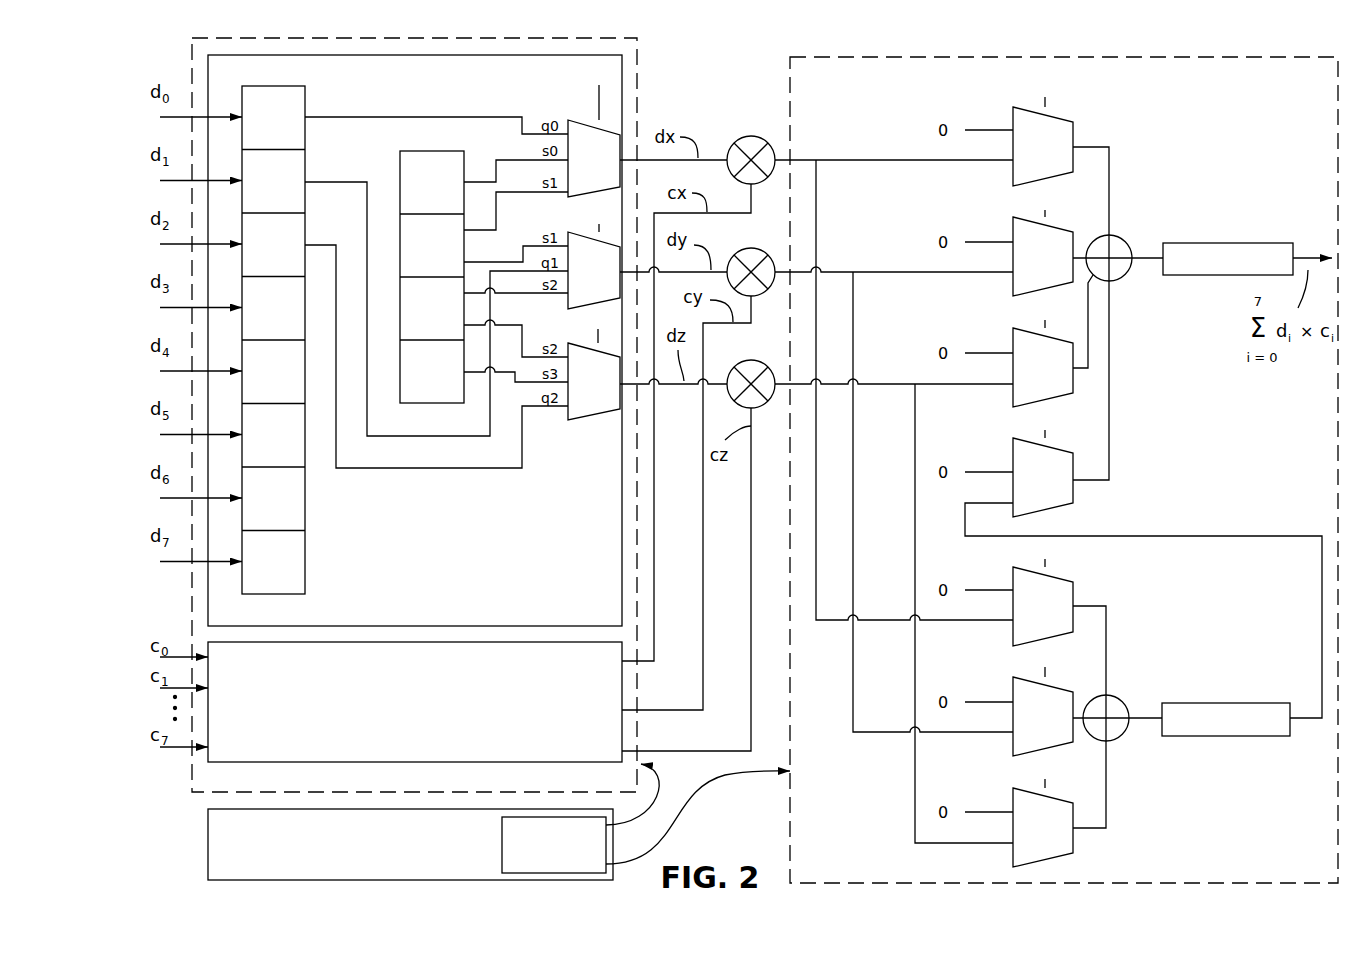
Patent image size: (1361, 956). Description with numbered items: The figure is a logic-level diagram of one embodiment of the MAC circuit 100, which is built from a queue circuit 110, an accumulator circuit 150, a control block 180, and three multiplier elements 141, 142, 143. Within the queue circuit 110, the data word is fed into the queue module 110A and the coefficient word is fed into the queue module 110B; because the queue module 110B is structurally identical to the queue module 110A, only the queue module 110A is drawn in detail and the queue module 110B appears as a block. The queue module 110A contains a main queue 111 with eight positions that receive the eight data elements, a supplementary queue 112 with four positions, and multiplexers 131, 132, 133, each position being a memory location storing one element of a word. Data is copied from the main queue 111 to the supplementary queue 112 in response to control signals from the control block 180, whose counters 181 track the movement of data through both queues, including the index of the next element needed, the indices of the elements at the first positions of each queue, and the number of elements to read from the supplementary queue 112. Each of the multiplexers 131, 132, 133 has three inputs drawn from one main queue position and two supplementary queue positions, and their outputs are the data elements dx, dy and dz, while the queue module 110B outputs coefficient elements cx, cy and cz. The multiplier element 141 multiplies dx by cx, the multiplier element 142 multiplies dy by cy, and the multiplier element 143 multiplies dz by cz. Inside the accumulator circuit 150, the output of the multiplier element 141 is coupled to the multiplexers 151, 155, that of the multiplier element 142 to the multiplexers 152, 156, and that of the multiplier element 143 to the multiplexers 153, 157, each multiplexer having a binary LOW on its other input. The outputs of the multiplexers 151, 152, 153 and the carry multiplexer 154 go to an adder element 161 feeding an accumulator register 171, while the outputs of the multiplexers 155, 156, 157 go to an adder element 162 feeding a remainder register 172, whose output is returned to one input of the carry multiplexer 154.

The MAC circuit 100 is at (699, 850).
The queue circuit 110 is at (397, 788).
The queue module 110A is at (396, 82).
The queue module 110B is at (392, 712).
The main queue 111 is at (273, 86).
The supplementary queue 112 is at (432, 151).
The multiplexer 131 is at (578, 168).
The multiplexer 132 is at (578, 281).
The multiplexer 133 is at (578, 393).
The multiplier element 141 is at (751, 136).
The multiplier element 142 is at (752, 248).
The multiplier element 143 is at (752, 360).
The accumulator circuit 150 is at (1064, 877).
The multiplexer 151 is at (1027, 157).
The multiplexer 152 is at (1027, 268).
The multiplexer 153 is at (1027, 378).
The carry multiplexer 154 is at (1027, 490).
The multiplexer 155 is at (1027, 616).
The multiplexer 156 is at (1027, 727).
The multiplexer 157 is at (1027, 838).
The adder element 161 is at (1127, 242).
The adder element 162 is at (1126, 702).
The accumulator register 171 is at (1260, 243).
The remainder register 172 is at (1270, 703).
The control block 180 is at (394, 867).
The counters 181 is at (538, 872).